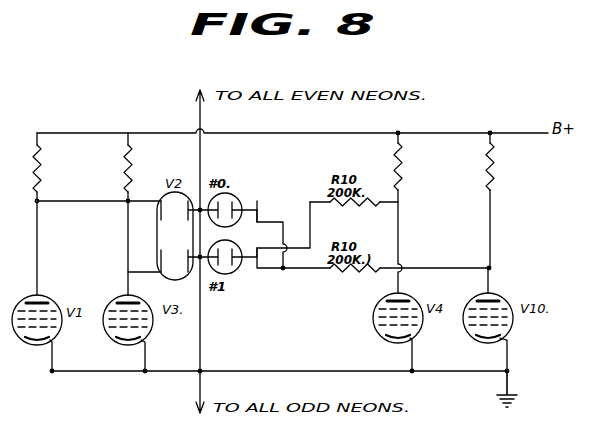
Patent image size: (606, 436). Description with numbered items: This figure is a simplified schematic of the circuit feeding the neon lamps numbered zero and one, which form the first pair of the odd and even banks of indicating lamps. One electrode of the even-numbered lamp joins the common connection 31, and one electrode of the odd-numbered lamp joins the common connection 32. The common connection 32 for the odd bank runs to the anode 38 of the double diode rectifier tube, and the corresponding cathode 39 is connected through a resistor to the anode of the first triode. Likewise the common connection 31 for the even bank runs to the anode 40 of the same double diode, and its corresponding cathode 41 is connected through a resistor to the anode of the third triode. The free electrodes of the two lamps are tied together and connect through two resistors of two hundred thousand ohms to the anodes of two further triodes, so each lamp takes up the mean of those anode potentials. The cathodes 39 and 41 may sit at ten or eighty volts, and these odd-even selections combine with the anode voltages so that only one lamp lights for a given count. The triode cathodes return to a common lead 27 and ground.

The common cathode return lead 27 is at (101, 377).
The common connection 31 is at (201, 116).
The common connection 32 is at (202, 386).
The anode 38 is at (192, 270).
The cathode 39 is at (158, 262).
The anode 40 is at (189, 201).
The cathode 41 is at (160, 212).